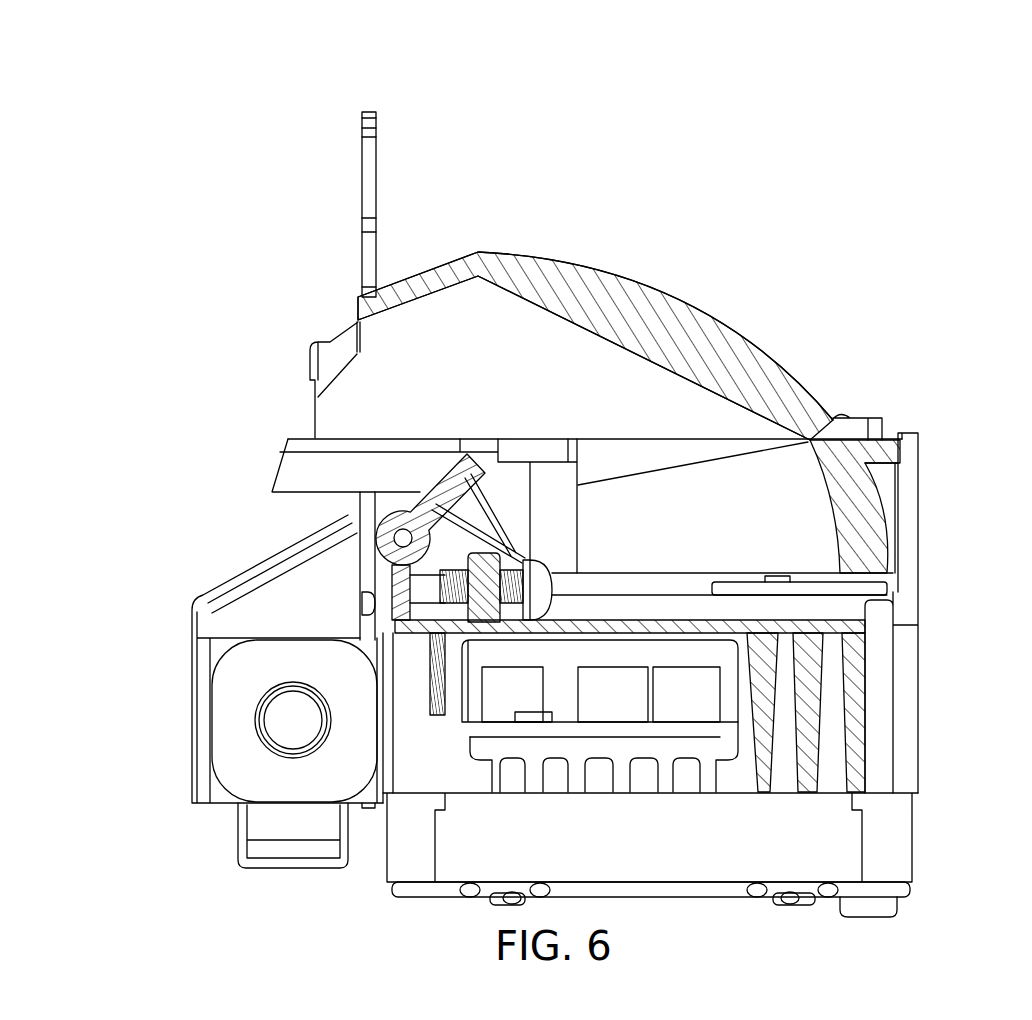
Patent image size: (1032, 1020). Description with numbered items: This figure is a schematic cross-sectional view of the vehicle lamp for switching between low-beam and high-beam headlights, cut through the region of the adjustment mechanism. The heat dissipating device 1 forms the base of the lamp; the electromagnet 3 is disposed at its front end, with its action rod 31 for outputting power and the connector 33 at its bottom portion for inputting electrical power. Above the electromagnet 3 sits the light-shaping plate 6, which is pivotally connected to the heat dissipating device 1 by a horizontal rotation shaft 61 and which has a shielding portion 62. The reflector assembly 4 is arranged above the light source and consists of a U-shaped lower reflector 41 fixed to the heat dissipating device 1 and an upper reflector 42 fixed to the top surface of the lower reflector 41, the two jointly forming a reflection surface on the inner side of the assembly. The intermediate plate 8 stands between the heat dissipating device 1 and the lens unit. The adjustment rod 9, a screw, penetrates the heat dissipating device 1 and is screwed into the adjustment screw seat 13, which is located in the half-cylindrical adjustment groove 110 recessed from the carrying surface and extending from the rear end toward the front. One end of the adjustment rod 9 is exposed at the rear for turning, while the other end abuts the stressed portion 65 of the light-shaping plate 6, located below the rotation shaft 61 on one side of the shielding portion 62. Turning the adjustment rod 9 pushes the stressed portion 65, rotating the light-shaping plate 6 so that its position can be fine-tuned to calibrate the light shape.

The heat dissipating device 1 is at (940, 682).
The electromagnet 3 is at (172, 798).
The reflector assembly 4 is at (722, 305).
The light-shaping plate 6 is at (278, 428).
The intermediate plate 8 is at (380, 100).
The adjustment rod 9 is at (565, 583).
The adjustment screw seat 13 is at (483, 565).
The action rod 31 is at (272, 720).
The connector 33 is at (242, 846).
The lower reflector 41 is at (863, 505).
The upper reflector 42 is at (636, 278).
The rotation shaft 61 is at (383, 518).
The shielding portion 62 is at (290, 470).
The stressed portion 65 is at (362, 603).
The adjustment groove 110 is at (855, 610).